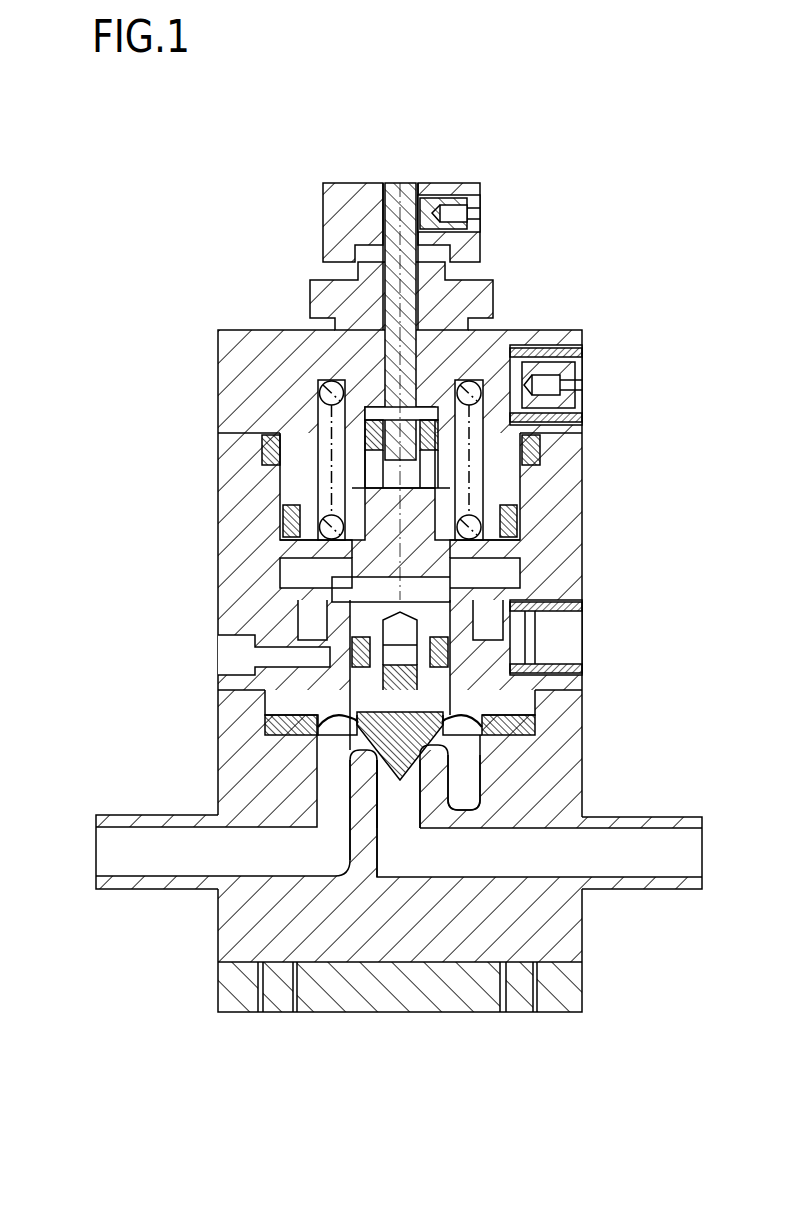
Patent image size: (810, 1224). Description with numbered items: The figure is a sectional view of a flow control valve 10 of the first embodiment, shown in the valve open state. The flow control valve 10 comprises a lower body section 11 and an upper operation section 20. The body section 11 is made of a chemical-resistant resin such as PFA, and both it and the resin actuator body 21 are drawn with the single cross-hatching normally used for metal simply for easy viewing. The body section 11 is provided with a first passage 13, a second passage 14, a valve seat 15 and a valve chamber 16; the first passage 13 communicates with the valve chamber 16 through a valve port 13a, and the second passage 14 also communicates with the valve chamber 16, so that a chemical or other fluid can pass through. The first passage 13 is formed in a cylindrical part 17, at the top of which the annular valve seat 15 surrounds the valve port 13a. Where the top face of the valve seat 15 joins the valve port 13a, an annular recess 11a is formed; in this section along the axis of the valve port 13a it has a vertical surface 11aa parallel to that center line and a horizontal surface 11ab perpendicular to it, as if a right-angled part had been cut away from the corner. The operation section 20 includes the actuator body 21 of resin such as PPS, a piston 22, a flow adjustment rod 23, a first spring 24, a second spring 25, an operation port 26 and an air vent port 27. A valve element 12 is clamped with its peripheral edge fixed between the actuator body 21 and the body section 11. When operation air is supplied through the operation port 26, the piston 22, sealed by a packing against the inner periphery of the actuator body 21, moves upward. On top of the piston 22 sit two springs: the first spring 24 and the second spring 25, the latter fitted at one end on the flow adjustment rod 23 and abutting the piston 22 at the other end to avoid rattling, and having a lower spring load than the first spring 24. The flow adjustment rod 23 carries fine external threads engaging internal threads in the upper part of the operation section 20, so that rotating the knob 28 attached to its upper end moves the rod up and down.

The flow control valve 10 is at (378, 575).
The body section 11 is at (60, 700).
The annular recess 11a is at (482, 735).
The vertical surface 11aa is at (380, 748).
The horizontal surface 11ab is at (352, 778).
The valve element 12 is at (330, 714).
The first passage 13 is at (673, 831).
The valve port 13a is at (392, 790).
The second passage 14 is at (117, 838).
The valve seat 15 is at (428, 740).
The valve chamber 16 is at (357, 736).
The cylindrical part 17 is at (437, 788).
The operation section 20 is at (61, 178).
The actuator body 21 is at (572, 493).
The piston 22 is at (520, 552).
The flow adjustment rod 23 is at (398, 197).
The first spring 24 is at (473, 437).
The second spring 25 is at (370, 512).
The operation port 26 is at (555, 657).
The air vent port 27 is at (582, 378).
The knob 28 is at (482, 248).